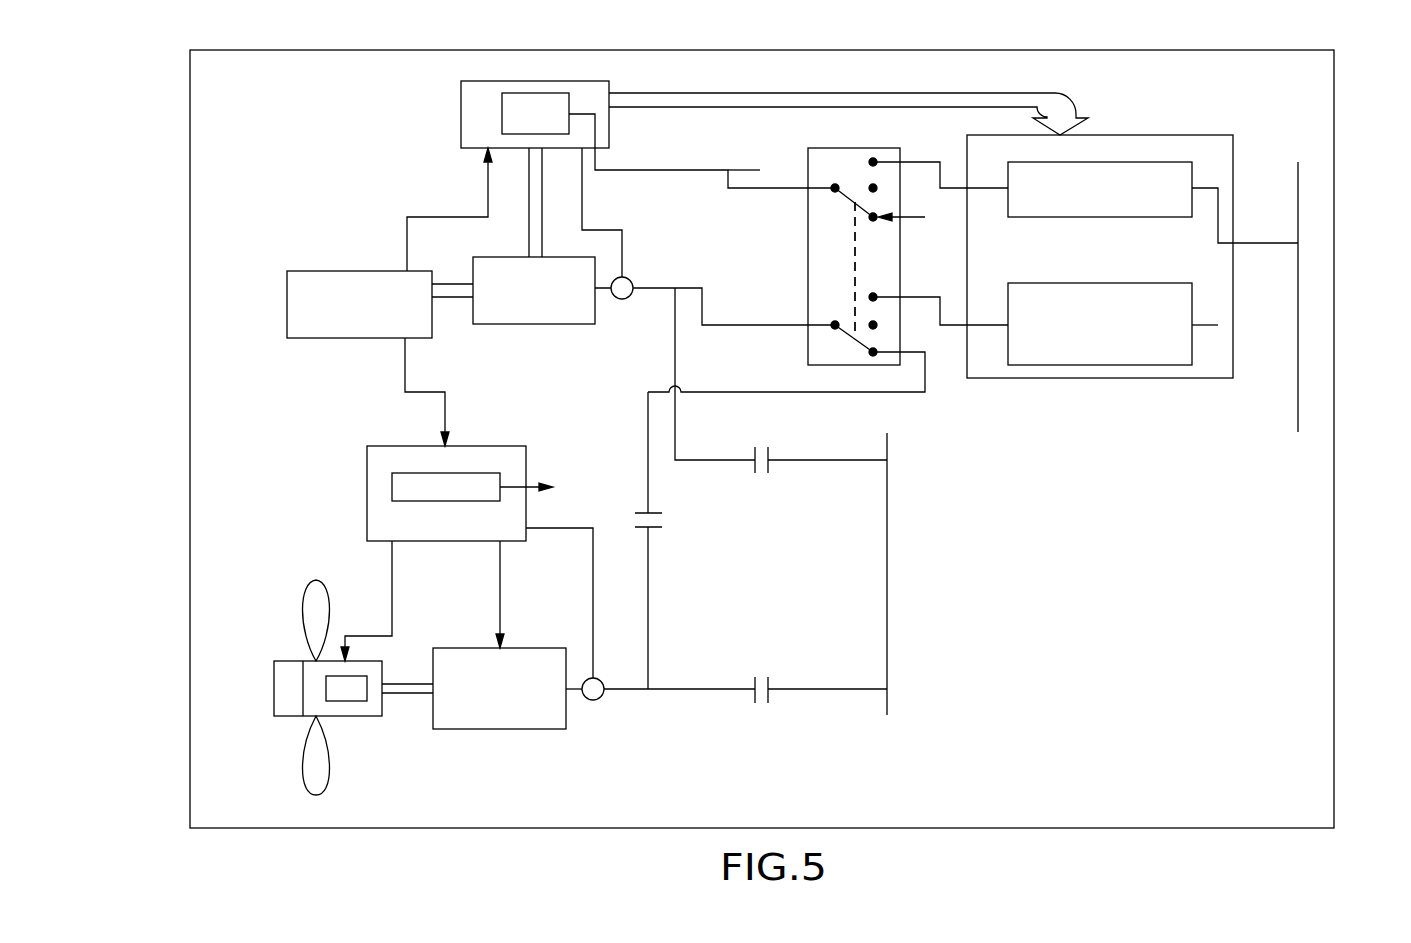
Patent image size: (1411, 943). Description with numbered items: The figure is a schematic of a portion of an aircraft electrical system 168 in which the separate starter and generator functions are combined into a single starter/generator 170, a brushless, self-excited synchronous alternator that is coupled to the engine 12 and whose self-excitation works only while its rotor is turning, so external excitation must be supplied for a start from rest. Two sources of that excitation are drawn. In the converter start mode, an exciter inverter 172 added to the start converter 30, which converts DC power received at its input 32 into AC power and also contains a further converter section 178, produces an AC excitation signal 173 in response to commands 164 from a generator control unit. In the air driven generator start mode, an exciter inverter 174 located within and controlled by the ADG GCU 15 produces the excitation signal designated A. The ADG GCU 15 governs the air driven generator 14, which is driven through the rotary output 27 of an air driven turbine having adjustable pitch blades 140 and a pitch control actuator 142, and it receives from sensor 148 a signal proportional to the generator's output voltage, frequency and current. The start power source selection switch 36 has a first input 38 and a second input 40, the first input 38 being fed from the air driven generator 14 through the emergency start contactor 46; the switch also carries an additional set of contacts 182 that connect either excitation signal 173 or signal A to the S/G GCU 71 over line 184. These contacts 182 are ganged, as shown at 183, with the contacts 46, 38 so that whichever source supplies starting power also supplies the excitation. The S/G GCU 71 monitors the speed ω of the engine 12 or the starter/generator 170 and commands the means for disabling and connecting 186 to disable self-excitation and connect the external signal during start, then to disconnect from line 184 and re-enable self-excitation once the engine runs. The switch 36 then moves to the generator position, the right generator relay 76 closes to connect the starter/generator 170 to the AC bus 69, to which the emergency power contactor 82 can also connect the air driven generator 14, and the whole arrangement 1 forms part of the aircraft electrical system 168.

The hybrid propulsion system 1 is at (1335, 755).
The engine 12 is at (353, 271).
The air driven generator 14 is at (504, 731).
The ADG GCU 15 is at (367, 477).
The rotary output 27 is at (405, 696).
The start converter 30 is at (1012, 378).
The input 32 is at (1222, 245).
The start power source selection switch 36 is at (808, 148).
The first input 38 is at (871, 356).
The second input 40 is at (873, 295).
The emergency start contactor 46 is at (655, 527).
The AC bus 69 is at (888, 633).
The S/G GCU 71 is at (461, 104).
The right generator relay 76 is at (770, 450).
The emergency power contactor 82 is at (772, 697).
The adjustable pitch blades 140 is at (303, 627).
The pitch control actuator 142 is at (343, 702).
The sensor 148 is at (600, 698).
The commands 164 is at (1068, 100).
The aircraft electrical system 168 is at (1018, 589).
The starter/generator 170 is at (522, 324).
The exciter inverter 172 is at (1147, 162).
The AC excitation signal 173 is at (922, 160).
The exciter inverter 174 is at (433, 473).
The inverter 178 is at (1113, 365).
The additional set of contacts 182 is at (848, 177).
The ganging 183 is at (853, 265).
The line 184 is at (703, 170).
The means for disabling and connecting 186 is at (502, 118).